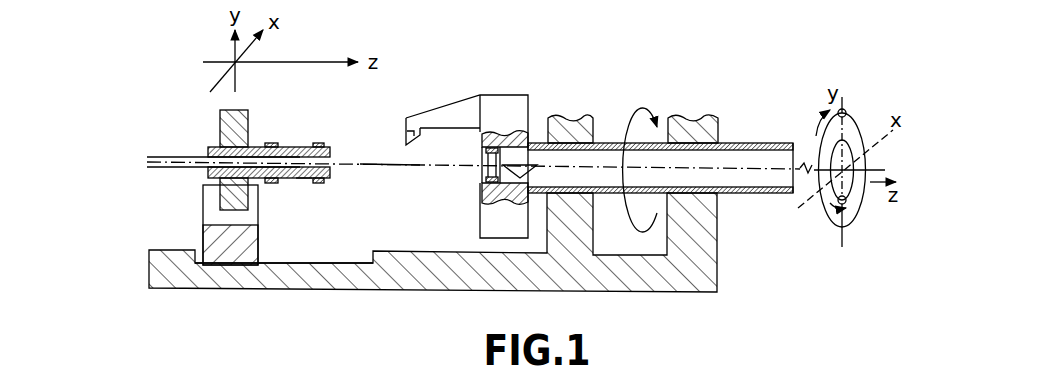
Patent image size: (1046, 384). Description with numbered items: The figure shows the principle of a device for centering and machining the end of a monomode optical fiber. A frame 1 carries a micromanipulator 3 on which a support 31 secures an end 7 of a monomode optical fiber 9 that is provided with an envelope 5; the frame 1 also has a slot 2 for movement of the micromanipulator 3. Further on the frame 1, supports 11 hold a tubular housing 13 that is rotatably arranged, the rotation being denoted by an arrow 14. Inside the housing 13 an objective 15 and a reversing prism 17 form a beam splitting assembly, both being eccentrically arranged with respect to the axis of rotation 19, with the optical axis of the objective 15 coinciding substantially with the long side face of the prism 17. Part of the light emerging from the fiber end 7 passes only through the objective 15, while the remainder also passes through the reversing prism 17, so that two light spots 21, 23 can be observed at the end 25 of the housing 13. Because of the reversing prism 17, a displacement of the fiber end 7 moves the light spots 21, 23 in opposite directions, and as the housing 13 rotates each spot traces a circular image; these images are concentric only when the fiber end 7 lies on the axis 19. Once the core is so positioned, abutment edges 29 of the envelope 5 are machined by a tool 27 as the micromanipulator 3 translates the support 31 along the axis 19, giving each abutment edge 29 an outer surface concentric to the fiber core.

The frame 1 is at (697, 268).
The slot 2 is at (293, 263).
The micromanipulator 3 is at (213, 200).
The envelope 5 is at (288, 180).
The end of monomode optical fiber 7 is at (305, 180).
The monomode optical fiber 9 is at (167, 158).
The supports 11 is at (576, 128).
The tubular housing 13 is at (608, 194).
The arrow 14 is at (634, 106).
The objective 15 is at (490, 170).
The reversing prism 17 is at (520, 170).
The axis of rotation 19 is at (386, 166).
The light spot 21 is at (846, 112).
The light spot 23 is at (846, 201).
The end of housing 25 is at (764, 143).
The tool 27 is at (409, 130).
The abutment edges 29 is at (270, 143).
The support 31 is at (237, 112).